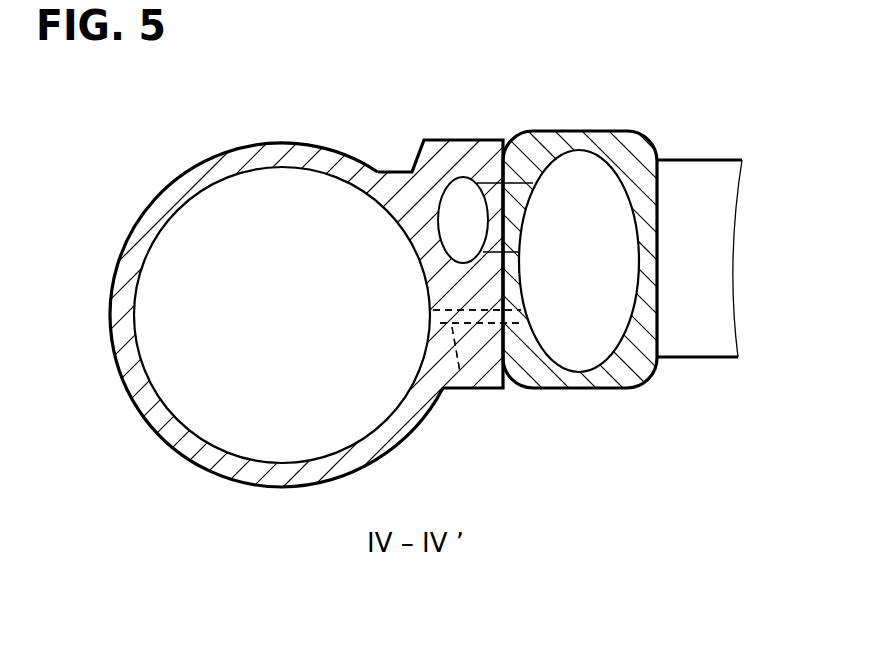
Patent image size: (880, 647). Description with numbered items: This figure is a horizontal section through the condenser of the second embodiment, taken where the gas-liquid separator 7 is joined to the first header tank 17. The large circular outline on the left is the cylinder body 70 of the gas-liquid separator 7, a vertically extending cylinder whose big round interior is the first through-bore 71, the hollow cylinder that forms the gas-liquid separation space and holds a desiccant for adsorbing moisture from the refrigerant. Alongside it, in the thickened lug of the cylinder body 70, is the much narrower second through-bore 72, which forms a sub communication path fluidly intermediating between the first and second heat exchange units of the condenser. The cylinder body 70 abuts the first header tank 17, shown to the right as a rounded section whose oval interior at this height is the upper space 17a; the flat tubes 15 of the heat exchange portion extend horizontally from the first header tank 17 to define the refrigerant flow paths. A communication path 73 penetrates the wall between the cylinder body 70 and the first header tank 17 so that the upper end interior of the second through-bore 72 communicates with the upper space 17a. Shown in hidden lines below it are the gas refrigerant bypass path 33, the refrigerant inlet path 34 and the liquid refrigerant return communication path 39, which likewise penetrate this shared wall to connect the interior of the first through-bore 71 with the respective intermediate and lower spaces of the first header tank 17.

The gas-liquid separator 7 is at (321, 288).
The cylinder body 70 is at (178, 177).
The first through-bore 71 is at (183, 205).
The second through-bore 72 is at (437, 185).
The communication path 73 is at (488, 188).
The first header tank 17 is at (627, 186).
The upper space 17a is at (563, 178).
The flat tubes 15 is at (697, 173).
The gas refrigerant bypass path 33 is at (447, 391).
The refrigerant inlet path 34 is at (477, 316).
The liquid refrigerant return communication path 39 is at (456, 349).